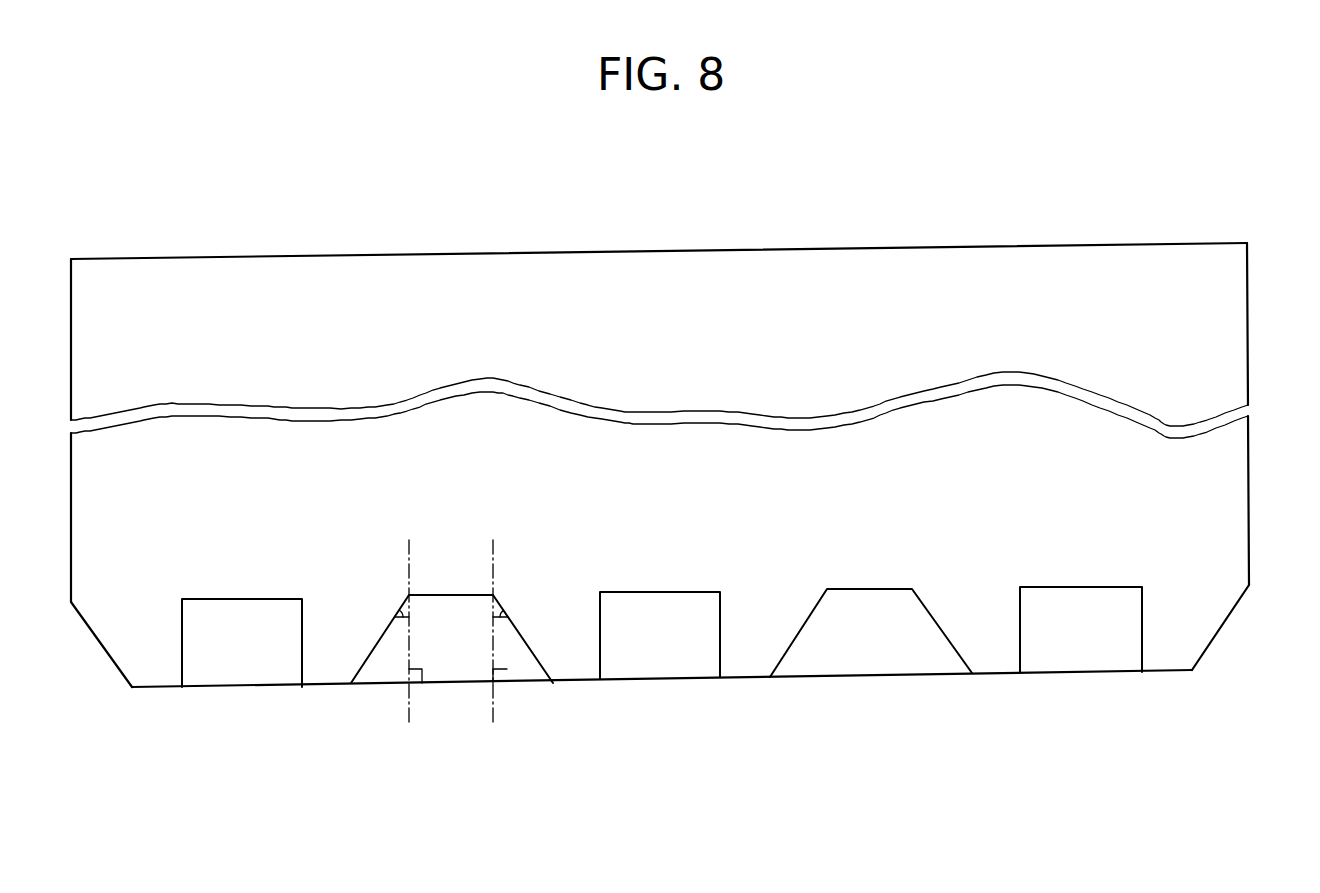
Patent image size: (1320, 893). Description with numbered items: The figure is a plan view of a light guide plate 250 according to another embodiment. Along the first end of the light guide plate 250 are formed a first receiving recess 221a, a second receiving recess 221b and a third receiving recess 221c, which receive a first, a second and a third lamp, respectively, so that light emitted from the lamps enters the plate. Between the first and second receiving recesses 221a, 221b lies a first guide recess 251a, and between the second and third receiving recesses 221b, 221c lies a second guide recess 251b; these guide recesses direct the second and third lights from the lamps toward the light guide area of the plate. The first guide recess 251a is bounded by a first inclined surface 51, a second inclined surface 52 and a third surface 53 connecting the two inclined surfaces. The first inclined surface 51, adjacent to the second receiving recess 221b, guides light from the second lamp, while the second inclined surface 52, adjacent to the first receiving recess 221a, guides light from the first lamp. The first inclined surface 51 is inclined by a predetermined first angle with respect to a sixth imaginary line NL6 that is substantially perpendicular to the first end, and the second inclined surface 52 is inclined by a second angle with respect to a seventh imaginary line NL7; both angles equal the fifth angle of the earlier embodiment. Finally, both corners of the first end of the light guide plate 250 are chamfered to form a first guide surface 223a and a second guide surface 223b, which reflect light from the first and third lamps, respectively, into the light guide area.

The light guide plate 250 is at (1244, 213).
The first guide surface 223a is at (110, 660).
The second guide surface 223b is at (1216, 645).
The first receiving recess 221a is at (242, 647).
The second receiving recess 221b is at (653, 640).
The third receiving recess 221c is at (1082, 633).
The first guide recess 251a is at (455, 625).
The second guide recess 251b is at (870, 653).
The first inclined surface 51 is at (547, 665).
The second inclined surface 52 is at (355, 668).
The third surface 53 is at (461, 593).
The sixth imaginary line NL6 is at (497, 718).
The seventh imaginary line NL7 is at (406, 718).